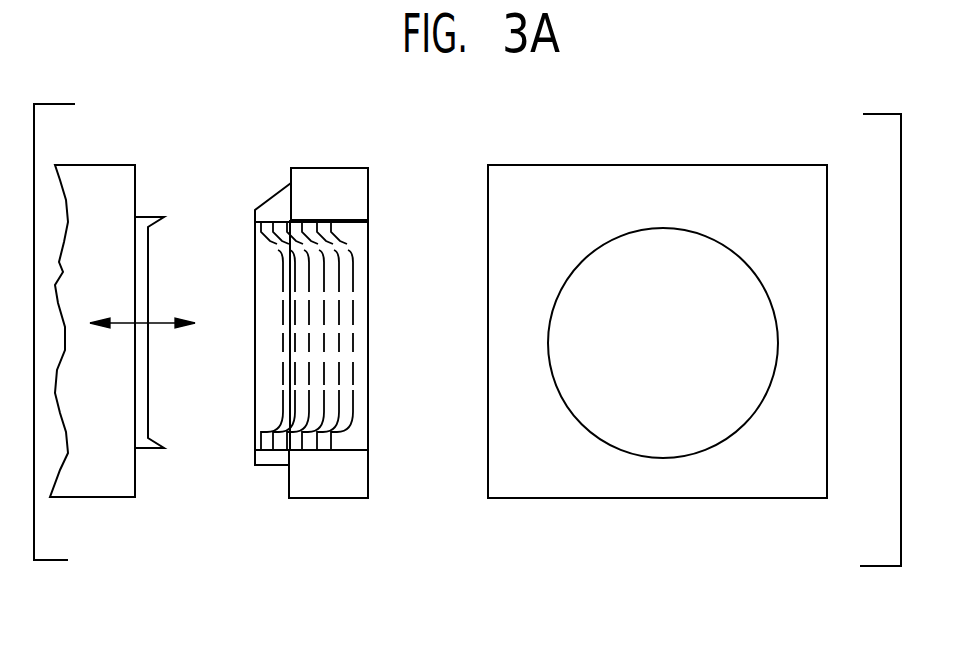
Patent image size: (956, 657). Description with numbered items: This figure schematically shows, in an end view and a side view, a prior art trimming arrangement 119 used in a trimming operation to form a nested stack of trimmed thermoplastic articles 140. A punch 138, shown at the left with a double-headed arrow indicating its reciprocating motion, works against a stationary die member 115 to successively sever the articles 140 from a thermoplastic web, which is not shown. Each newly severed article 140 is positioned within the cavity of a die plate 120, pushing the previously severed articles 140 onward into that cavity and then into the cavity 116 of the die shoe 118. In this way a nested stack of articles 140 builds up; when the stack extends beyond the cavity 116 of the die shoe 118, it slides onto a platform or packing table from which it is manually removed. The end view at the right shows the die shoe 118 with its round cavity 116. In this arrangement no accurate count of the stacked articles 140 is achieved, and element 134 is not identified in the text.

The trimming arrangement 119 is at (212, 155).
The die plate 120 is at (273, 192).
The die shoe 118 is at (325, 166).
The thermoplastic articles 140 is at (356, 250).
The cavity 116 is at (368, 365).
The punch 138 is at (152, 270).
The plate 134 is at (77, 499).
The stationary die member 115 is at (277, 472).